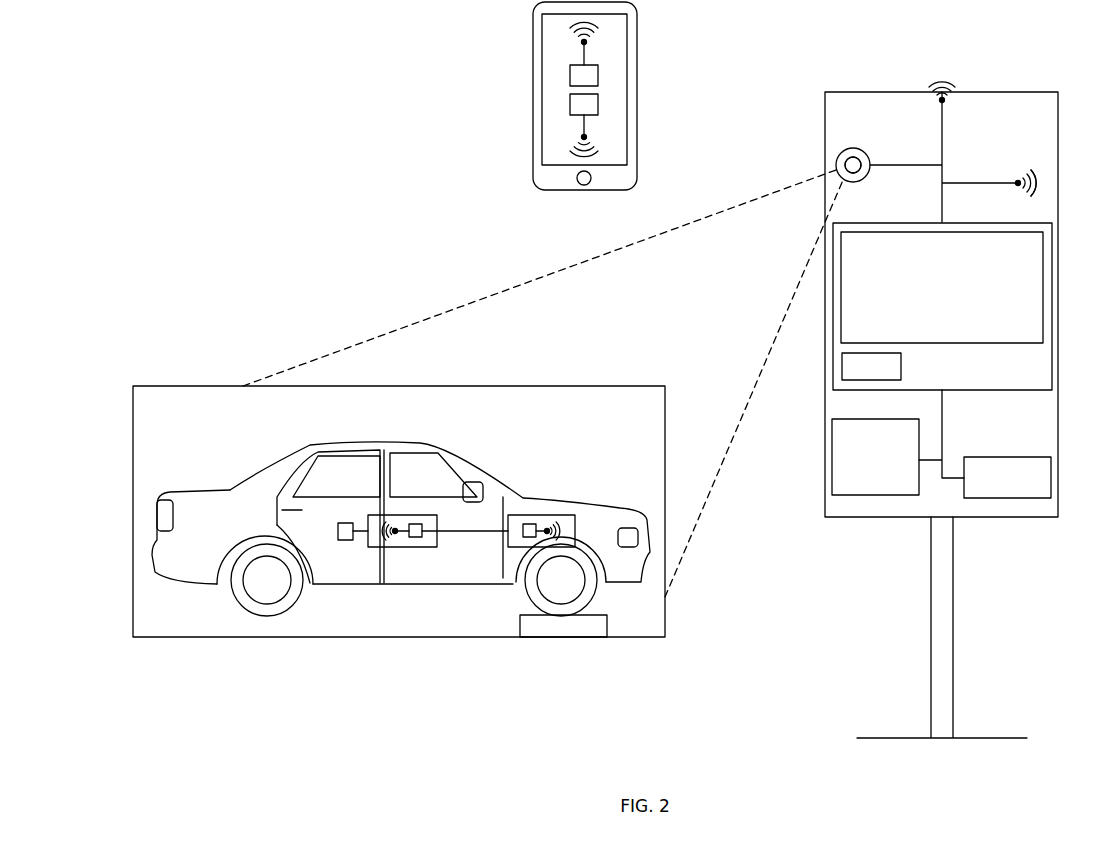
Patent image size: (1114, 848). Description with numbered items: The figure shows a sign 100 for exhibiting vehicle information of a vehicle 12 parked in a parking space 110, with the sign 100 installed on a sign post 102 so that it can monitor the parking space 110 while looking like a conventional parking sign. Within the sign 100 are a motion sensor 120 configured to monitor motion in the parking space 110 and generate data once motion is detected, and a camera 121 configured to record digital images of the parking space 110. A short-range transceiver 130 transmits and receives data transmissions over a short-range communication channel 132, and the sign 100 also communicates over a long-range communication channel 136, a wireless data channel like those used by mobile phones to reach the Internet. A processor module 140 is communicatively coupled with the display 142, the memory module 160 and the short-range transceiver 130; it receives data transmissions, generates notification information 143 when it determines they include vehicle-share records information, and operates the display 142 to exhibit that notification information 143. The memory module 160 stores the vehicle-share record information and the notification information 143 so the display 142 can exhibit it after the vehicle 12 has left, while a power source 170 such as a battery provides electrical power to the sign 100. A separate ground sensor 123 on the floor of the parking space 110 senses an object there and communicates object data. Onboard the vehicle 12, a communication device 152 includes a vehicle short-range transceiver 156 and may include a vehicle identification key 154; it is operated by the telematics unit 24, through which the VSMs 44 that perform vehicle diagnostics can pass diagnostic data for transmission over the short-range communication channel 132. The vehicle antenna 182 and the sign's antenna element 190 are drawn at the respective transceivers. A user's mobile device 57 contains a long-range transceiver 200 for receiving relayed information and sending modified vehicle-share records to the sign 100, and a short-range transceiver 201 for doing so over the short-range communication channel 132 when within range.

The vehicle 12 is at (412, 428).
The telematics unit 24 is at (420, 513).
The VSMs 44 is at (347, 540).
The mobile device 57 is at (533, 104).
The sign 100 is at (800, 78).
The sign post 102 is at (955, 602).
The parking space 110 is at (213, 386).
The motion sensor 120 is at (853, 148).
The camera 121 is at (860, 170).
The ground sensor 123 is at (562, 625).
The short-range transceiver 130 is at (1046, 170).
The short-range communication channel 132 is at (1040, 190).
The long-range communication channel 136 is at (942, 80).
The processor module 140 is at (842, 368).
The display 142 is at (1030, 266).
The notification information 143 is at (1020, 315).
The communication device 152 is at (583, 523).
The vehicle identification key 154 is at (527, 522).
The vehicle short-range transceiver 156 is at (557, 522).
The memory module 160 is at (843, 495).
The power source 170 is at (1040, 498).
The vehicle antenna 182 is at (388, 522).
The antenna node 190 is at (945, 103).
The long-range transceiver 200 is at (570, 75).
The short-range transceiver 201 is at (570, 102).